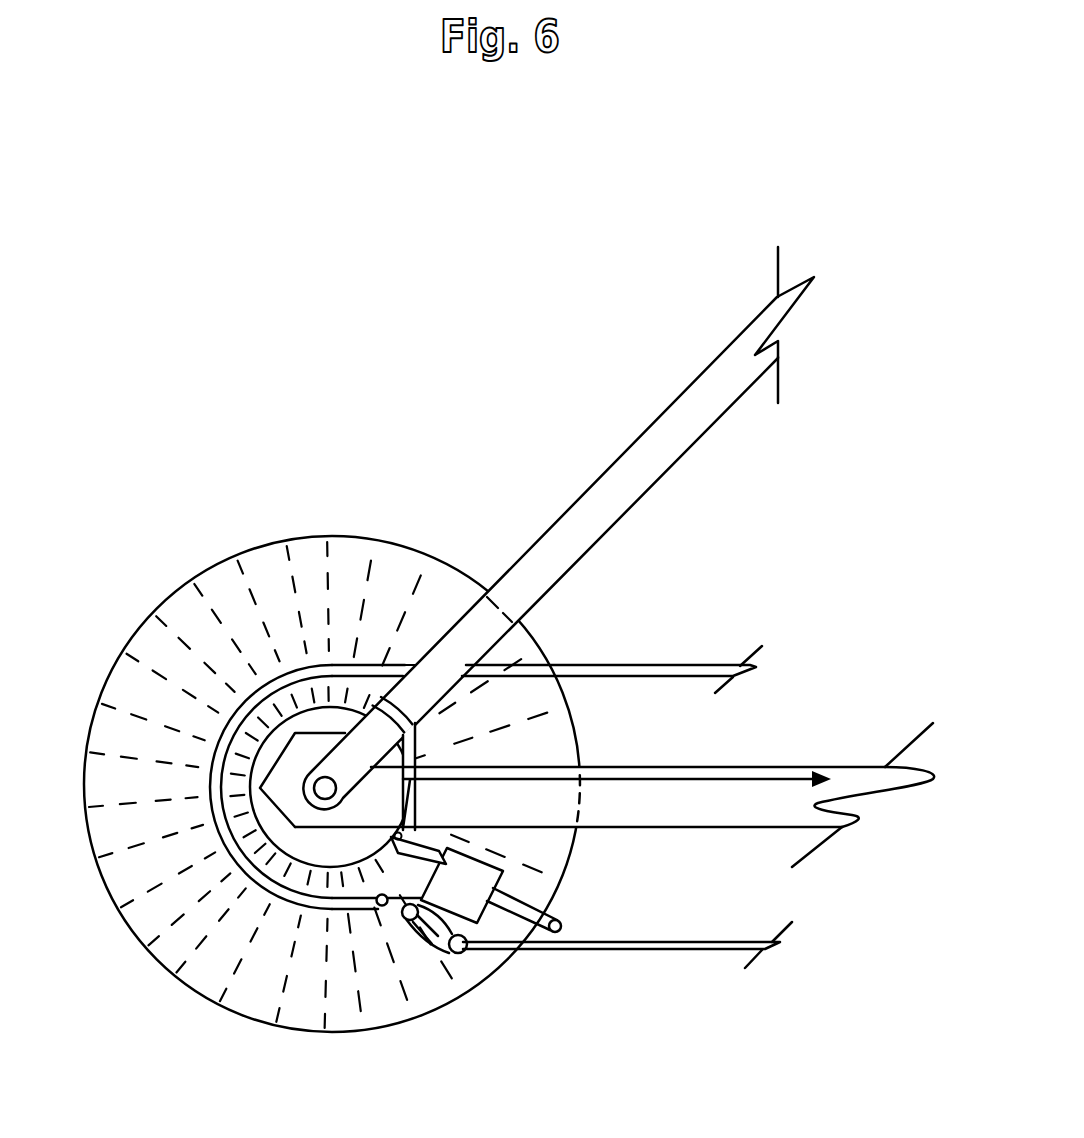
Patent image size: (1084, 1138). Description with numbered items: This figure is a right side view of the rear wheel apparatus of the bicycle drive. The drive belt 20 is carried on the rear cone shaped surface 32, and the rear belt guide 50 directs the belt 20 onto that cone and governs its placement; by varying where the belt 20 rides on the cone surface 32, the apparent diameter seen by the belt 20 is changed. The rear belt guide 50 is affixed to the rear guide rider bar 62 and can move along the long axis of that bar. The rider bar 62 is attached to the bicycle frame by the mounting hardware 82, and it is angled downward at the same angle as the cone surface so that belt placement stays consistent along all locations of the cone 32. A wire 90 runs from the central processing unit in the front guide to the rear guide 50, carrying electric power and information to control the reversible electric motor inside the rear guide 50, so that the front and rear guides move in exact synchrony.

The drive belt 20 is at (660, 667).
The rear cone shaped surface 32 is at (308, 997).
The rear belt guide 50 is at (471, 893).
The rear guide rider bar 62 is at (553, 934).
The mounting hardware 82 is at (420, 733).
The wire 90 is at (775, 781).